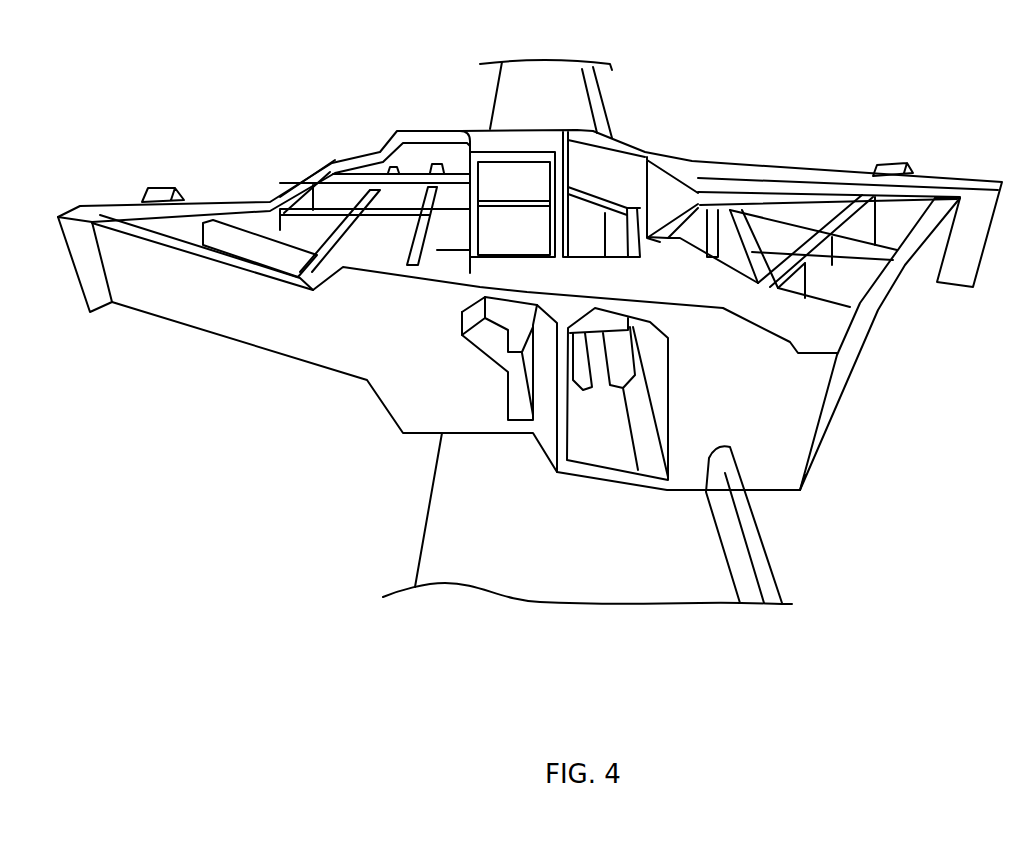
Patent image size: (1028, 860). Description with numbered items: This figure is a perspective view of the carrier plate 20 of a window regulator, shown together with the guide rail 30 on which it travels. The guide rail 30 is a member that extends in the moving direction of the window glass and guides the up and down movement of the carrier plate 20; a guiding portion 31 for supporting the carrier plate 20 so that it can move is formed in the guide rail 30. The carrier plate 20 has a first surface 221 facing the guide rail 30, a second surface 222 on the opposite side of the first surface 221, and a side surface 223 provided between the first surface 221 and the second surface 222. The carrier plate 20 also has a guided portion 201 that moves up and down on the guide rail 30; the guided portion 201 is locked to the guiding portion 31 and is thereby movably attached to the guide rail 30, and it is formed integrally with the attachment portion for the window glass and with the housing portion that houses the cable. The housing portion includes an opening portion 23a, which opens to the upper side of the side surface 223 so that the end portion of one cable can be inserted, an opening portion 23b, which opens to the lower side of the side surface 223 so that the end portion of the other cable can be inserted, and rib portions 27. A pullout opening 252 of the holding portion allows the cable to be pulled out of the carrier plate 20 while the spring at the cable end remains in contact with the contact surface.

The carrier plate 20 is at (735, 173).
The rib portions 27 is at (603, 283).
The opening portion 23a is at (597, 213).
The opening portion 23b is at (512, 216).
The second surface 222 is at (888, 268).
The side surface 223 is at (757, 427).
The first surface 221 is at (768, 503).
The pullout opening 252 is at (523, 409).
The guided portion 201 is at (693, 403).
The guide rail 30 is at (470, 508).
The guiding portion 31 is at (763, 550).